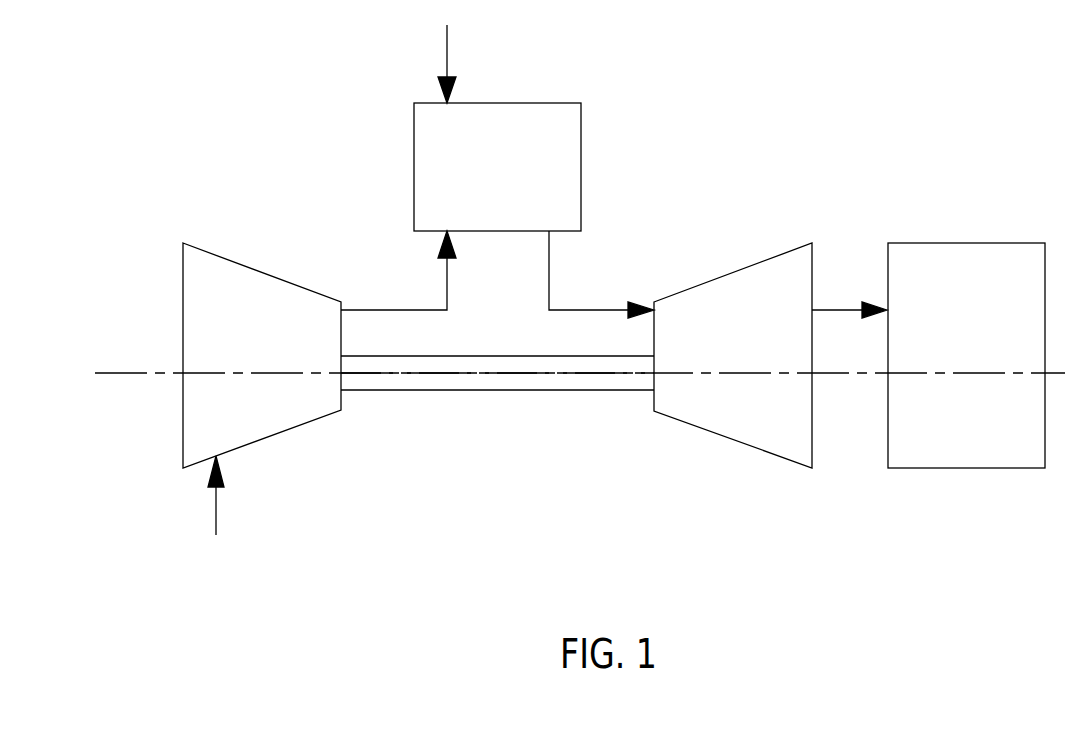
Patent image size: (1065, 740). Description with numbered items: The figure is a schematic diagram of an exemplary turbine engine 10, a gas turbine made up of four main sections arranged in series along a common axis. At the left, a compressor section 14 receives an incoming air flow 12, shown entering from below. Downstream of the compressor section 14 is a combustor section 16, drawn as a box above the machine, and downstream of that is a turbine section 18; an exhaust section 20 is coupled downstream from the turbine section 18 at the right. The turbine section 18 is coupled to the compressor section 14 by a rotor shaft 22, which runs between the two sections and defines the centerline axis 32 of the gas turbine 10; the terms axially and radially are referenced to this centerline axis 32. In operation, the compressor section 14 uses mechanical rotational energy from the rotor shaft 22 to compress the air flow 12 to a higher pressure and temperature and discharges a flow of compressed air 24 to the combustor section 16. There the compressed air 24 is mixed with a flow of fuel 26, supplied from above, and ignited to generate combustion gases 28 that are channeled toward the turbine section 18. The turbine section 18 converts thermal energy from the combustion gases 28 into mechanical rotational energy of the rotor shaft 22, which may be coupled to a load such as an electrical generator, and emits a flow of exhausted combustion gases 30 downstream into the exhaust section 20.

The turbine engine 10 is at (204, 122).
The air flow 12 is at (216, 513).
The compressor section 14 is at (270, 337).
The combustor section 16 is at (505, 183).
The turbine section 18 is at (748, 337).
The exhaust section 20 is at (978, 337).
The rotor shaft 22 is at (451, 392).
The compressed air 24 is at (380, 305).
The fuel 26 is at (450, 43).
The combustion gases 28 is at (610, 305).
The exhausted combustion gases 30 is at (840, 305).
The centerline axis 32 is at (543, 375).